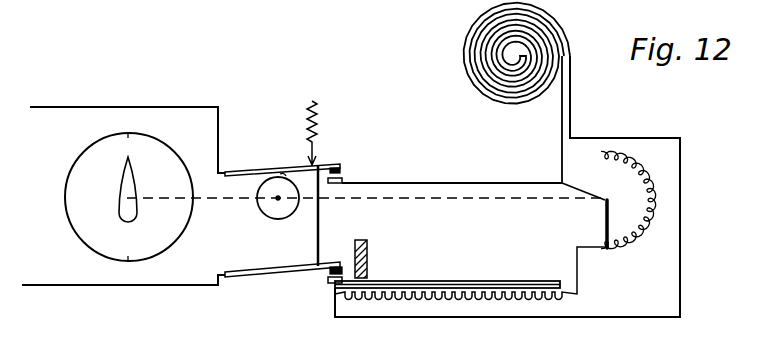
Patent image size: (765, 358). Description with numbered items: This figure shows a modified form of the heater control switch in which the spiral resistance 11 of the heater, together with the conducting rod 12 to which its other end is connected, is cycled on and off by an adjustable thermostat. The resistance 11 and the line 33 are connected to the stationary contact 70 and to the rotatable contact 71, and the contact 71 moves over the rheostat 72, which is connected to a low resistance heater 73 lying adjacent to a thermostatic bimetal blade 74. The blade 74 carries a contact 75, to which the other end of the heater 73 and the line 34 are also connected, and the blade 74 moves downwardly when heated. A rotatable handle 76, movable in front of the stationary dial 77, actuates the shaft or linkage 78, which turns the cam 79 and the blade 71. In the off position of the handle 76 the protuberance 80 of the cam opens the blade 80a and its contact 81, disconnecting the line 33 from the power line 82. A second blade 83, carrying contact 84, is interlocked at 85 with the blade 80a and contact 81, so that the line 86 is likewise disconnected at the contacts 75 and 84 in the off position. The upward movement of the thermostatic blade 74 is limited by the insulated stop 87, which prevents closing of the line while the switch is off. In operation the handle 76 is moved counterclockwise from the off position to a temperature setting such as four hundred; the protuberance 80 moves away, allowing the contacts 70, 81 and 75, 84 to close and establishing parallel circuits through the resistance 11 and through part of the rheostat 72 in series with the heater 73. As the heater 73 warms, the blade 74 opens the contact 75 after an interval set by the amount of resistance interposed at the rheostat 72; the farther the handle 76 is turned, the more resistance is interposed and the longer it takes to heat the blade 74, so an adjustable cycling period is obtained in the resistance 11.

The spiral resistance 11 is at (562, 116).
The conducting rod 12 is at (570, 96).
The line 33 is at (451, 183).
The line 34 is at (627, 138).
The stationary contact 70 is at (342, 181).
The rotatable contact 71 is at (605, 217).
The rheostat 72 is at (630, 243).
The low resistance heater 73 is at (480, 303).
The thermostatic bimetal blade 74 is at (437, 281).
The contact 75 is at (328, 279).
The rotatable handle 76 is at (128, 177).
The stationary dial 77 is at (73, 170).
The shaft or linkage 78 is at (230, 200).
The cam 79 is at (272, 212).
The protuberance 80 is at (292, 160).
The blade 80a is at (240, 172).
The contact 81 is at (340, 169).
The power line 82 is at (73, 107).
The blade 83 is at (257, 275).
The contact 84 is at (343, 266).
The interlock 85 is at (322, 213).
The line 86 is at (85, 287).
The insulated stop 87 is at (367, 244).